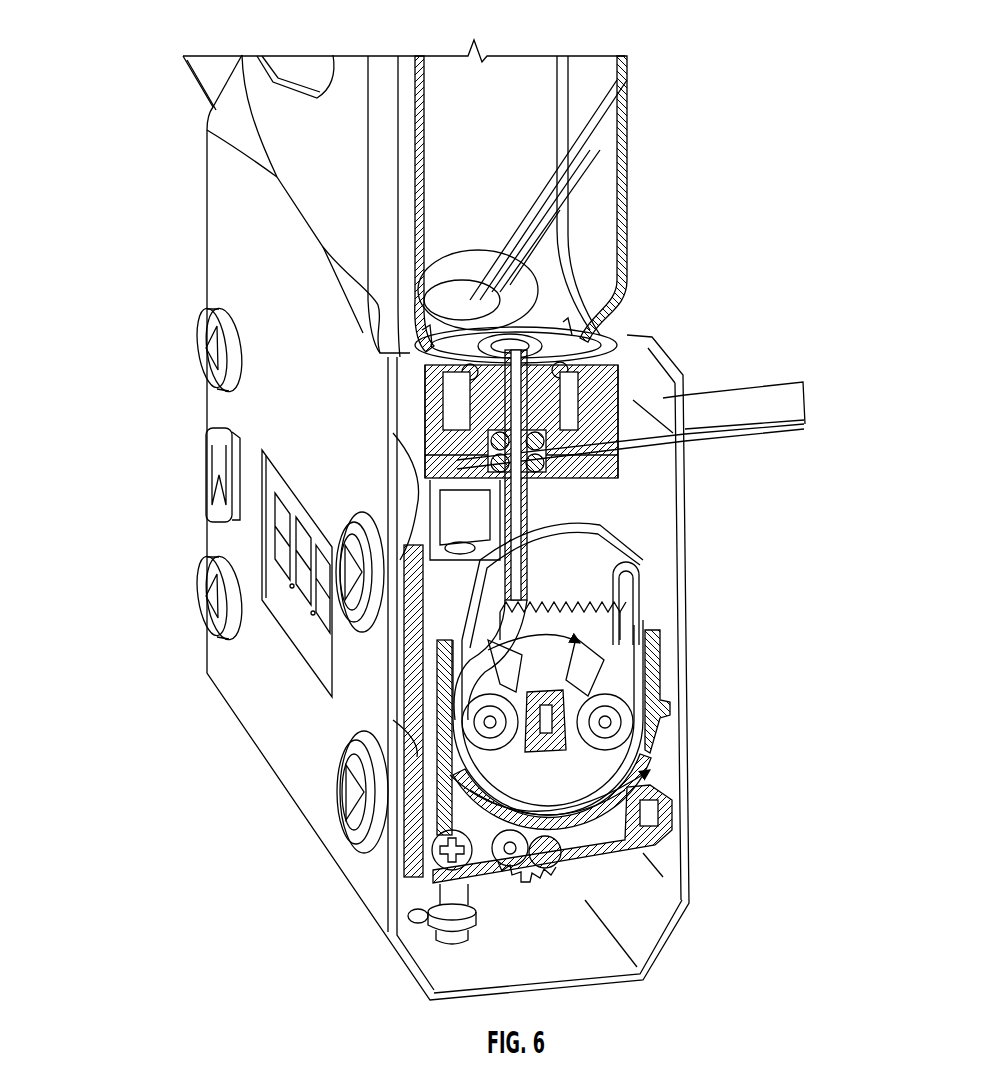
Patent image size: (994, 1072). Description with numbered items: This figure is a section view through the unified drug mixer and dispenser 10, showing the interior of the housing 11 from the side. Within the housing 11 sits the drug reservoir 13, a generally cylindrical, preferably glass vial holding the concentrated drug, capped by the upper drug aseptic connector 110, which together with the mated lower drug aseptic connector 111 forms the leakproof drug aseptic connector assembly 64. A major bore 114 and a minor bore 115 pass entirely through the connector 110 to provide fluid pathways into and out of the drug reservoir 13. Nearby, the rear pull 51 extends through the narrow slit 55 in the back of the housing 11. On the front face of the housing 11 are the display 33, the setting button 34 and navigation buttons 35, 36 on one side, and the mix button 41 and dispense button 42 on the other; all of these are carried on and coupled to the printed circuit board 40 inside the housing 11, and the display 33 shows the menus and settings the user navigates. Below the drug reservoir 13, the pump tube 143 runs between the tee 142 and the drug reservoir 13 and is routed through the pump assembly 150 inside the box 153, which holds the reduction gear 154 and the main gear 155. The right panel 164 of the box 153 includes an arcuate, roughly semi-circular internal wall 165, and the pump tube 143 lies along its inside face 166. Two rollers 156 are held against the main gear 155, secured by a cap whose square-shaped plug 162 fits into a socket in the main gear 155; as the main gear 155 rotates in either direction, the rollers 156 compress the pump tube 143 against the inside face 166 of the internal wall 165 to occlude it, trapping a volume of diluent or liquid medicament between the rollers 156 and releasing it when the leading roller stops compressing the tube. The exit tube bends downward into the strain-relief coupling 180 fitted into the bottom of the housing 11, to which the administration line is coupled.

The unified drug mixer and dispenser 10 is at (140, 116).
The housing 11 is at (216, 193).
The drug reservoir 13 is at (628, 172).
The display 33 is at (286, 482).
The setting button 34 is at (206, 443).
The navigation button 35 is at (206, 322).
The navigation button 36 is at (206, 576).
The printed circuit board 40 is at (420, 918).
The mix button 41 is at (344, 534).
The dispense button 42 is at (348, 748).
The rear pull 51 is at (762, 398).
The slit 55 is at (663, 398).
The drug aseptic connector assembly 64 is at (622, 355).
The upper drug aseptic connector 110 is at (640, 375).
The lower drug aseptic connector 111 is at (626, 464).
The major bore 114 is at (512, 343).
The minor bore 115 is at (516, 340).
The tee 142 is at (432, 542).
The pump tube 143 is at (628, 545).
The pump assembly 150 is at (598, 598).
The box 153 is at (655, 742).
The reduction gear 154 is at (546, 902).
The main gear 155 is at (615, 595).
The rollers 156 is at (480, 692).
The square-shaped plug 162 is at (538, 700).
The right panel 164 is at (672, 830).
The internal wall 165 is at (440, 728).
The inside face 166 is at (520, 805).
The strain-relief coupling 180 is at (432, 935).